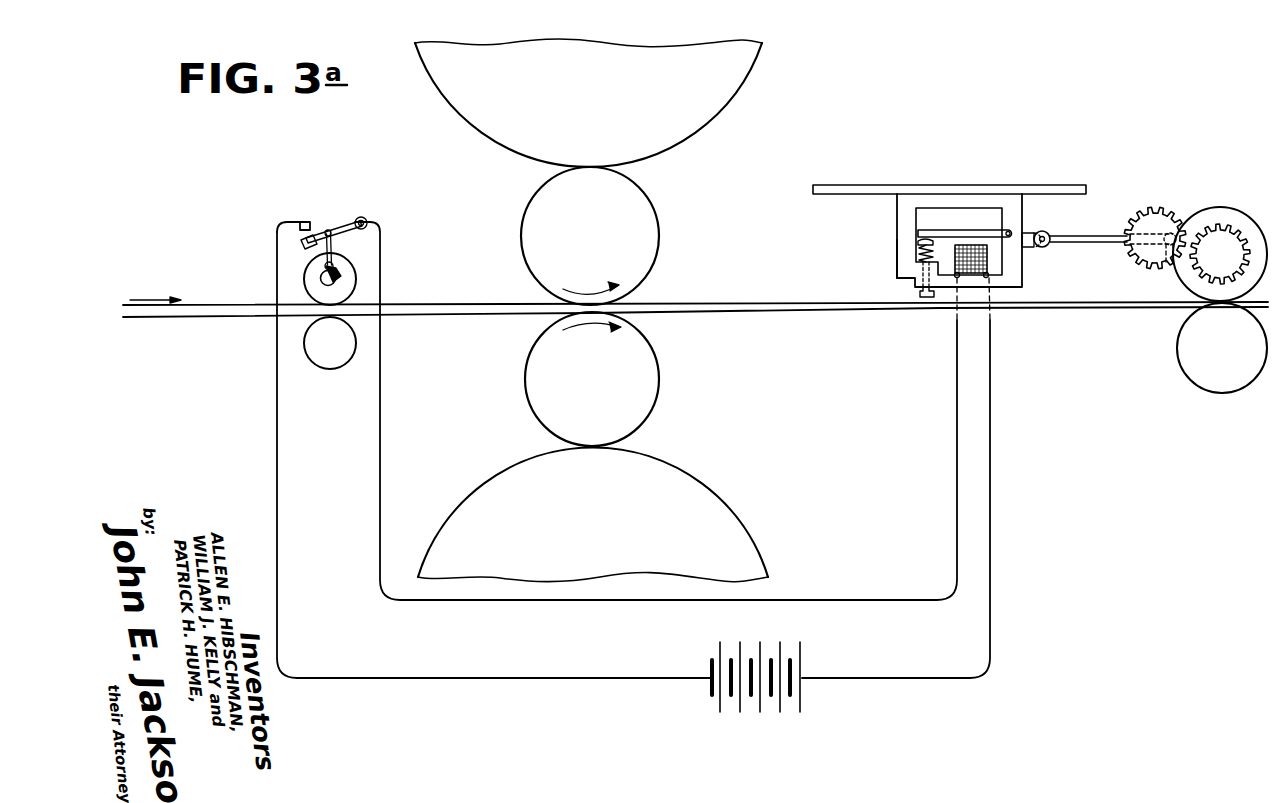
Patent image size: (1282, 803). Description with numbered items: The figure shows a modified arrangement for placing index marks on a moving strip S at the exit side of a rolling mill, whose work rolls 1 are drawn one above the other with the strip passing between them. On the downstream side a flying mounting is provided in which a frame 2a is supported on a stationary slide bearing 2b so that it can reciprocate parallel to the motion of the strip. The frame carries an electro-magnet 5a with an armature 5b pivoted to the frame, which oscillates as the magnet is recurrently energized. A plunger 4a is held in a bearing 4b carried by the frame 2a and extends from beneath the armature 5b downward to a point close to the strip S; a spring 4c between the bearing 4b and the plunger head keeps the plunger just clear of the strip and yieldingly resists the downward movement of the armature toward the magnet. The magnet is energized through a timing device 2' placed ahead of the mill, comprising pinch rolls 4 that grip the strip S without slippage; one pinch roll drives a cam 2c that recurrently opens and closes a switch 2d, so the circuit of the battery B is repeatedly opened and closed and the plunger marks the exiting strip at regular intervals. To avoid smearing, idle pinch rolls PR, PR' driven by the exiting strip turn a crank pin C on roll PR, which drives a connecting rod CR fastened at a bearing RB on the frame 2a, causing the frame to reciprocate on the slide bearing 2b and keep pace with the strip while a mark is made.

The work rolls 1 is at (648, 236).
The strip S is at (225, 311).
The pinch roll 4 is at (348, 283).
The frame 2a is at (1012, 220).
The stationary slide bearing 2b is at (1067, 164).
The cam 2c is at (340, 272).
The switch 2d is at (338, 229).
The timing device 2' is at (367, 207).
The plunger 4a is at (919, 245).
The plunger bearing 4b is at (898, 257).
The spring 4c is at (914, 257).
The electro-magnet 5a is at (972, 257).
The armature 5b is at (950, 230).
The bearing RB is at (1040, 250).
The connecting rod CR is at (1103, 243).
The crank pin C is at (1176, 228).
The idle pinch roll PR is at (1220, 223).
The idle pinch roll PR' is at (1188, 348).
The battery B is at (742, 698).